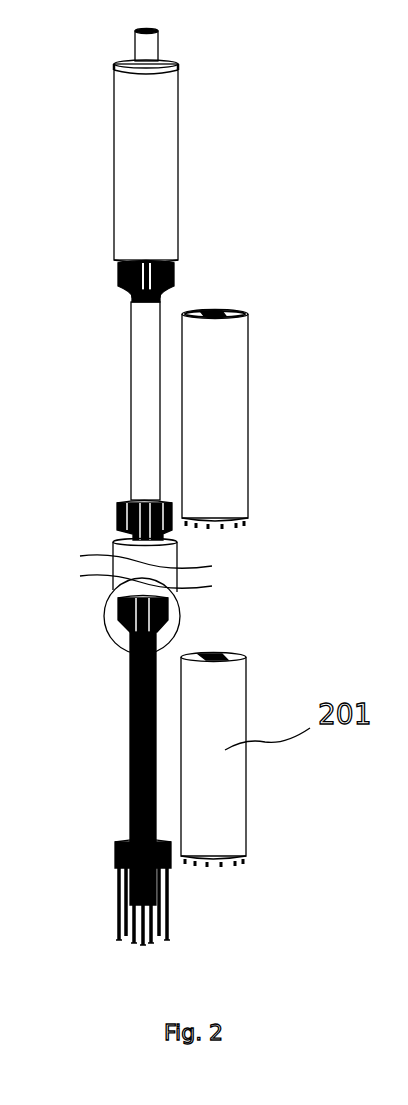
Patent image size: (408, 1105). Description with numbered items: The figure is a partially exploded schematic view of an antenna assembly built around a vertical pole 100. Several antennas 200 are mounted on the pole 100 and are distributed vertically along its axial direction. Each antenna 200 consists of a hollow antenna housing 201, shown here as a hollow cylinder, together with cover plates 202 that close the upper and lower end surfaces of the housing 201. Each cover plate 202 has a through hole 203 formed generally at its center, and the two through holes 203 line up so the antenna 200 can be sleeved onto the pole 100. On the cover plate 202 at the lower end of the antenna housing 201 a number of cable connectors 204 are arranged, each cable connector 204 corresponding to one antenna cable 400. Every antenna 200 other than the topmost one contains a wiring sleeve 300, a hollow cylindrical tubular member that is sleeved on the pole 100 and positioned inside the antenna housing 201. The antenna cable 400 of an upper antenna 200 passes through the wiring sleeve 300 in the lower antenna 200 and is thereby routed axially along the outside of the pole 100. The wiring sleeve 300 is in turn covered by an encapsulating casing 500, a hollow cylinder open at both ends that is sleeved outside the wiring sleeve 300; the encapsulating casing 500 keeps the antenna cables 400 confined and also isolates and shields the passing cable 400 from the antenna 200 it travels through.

The pole 100 is at (157, 48).
The antenna 200 is at (150, 195).
The antenna housing 201 is at (279, 376).
The cover plate 202 is at (238, 308).
The through hole 203 is at (207, 313).
The cable connector 204 is at (116, 272).
The wiring sleeve 300 is at (134, 296).
The antenna cable 400 is at (117, 518).
The encapsulating casing 500 is at (145, 396).